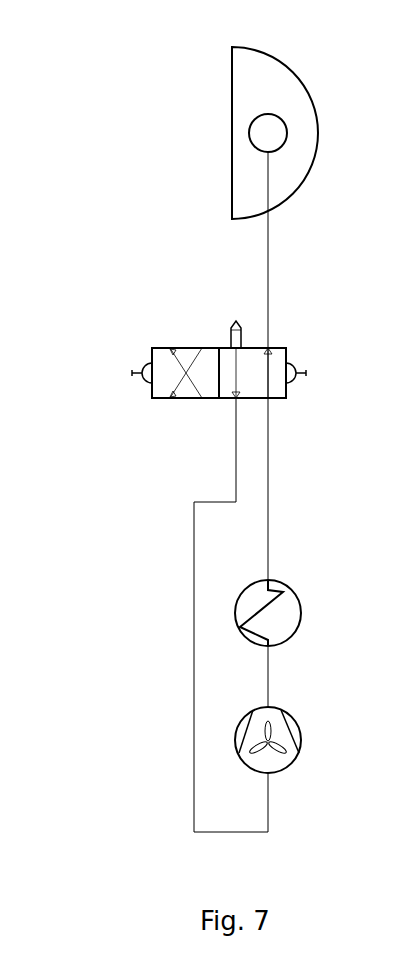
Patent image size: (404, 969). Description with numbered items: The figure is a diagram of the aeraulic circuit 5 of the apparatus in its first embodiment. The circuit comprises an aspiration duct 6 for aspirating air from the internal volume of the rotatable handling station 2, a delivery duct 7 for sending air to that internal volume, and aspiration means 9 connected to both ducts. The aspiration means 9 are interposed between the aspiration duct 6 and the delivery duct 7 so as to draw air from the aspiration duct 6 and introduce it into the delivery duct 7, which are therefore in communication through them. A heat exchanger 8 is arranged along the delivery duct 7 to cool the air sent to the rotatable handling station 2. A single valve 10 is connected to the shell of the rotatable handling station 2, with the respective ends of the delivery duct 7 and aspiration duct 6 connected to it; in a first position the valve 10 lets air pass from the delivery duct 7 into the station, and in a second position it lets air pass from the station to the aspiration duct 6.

The rotatable handling station 2 is at (280, 100).
The aeraulic circuit 5 is at (178, 525).
The aspiration duct 6 is at (193, 605).
The delivery duct 7 is at (267, 482).
The heat exchanger 8 is at (283, 623).
The aspiration means 9 is at (287, 760).
The valve 10 is at (181, 313).